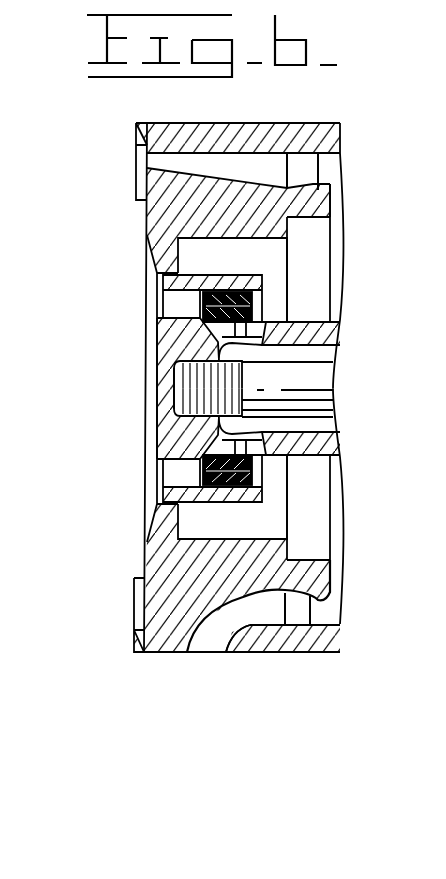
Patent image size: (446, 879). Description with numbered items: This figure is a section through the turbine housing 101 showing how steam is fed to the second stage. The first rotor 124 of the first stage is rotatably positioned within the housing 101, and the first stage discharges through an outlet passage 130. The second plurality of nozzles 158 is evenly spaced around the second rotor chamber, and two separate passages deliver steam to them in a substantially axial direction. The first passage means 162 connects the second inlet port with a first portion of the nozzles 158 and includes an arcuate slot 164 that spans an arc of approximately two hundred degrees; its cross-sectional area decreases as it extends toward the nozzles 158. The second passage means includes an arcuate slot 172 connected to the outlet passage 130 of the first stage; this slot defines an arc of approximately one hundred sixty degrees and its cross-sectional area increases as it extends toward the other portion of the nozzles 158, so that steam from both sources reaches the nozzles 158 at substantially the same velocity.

The housing 101 is at (133, 642).
The first rotor 124 is at (178, 336).
The outlet passage 130 is at (162, 162).
The second plurality of nozzles 158 is at (302, 177).
The first passage means 162 is at (198, 662).
The arcuate slot 164 is at (268, 626).
The arcuate slot 172 is at (264, 179).